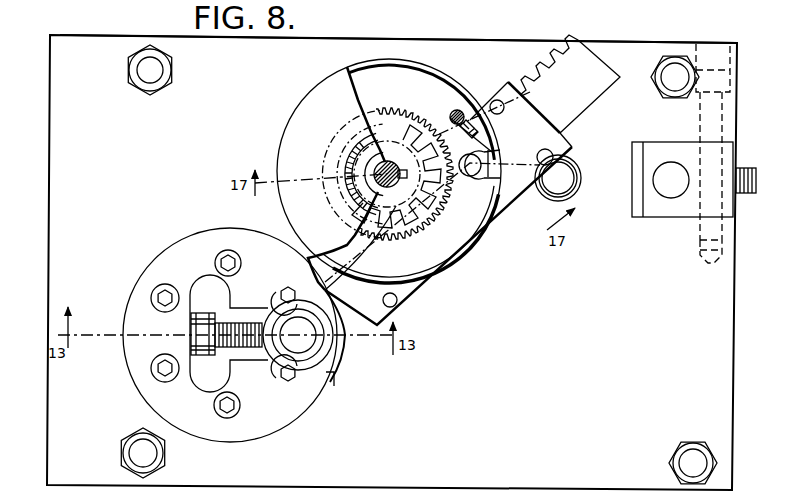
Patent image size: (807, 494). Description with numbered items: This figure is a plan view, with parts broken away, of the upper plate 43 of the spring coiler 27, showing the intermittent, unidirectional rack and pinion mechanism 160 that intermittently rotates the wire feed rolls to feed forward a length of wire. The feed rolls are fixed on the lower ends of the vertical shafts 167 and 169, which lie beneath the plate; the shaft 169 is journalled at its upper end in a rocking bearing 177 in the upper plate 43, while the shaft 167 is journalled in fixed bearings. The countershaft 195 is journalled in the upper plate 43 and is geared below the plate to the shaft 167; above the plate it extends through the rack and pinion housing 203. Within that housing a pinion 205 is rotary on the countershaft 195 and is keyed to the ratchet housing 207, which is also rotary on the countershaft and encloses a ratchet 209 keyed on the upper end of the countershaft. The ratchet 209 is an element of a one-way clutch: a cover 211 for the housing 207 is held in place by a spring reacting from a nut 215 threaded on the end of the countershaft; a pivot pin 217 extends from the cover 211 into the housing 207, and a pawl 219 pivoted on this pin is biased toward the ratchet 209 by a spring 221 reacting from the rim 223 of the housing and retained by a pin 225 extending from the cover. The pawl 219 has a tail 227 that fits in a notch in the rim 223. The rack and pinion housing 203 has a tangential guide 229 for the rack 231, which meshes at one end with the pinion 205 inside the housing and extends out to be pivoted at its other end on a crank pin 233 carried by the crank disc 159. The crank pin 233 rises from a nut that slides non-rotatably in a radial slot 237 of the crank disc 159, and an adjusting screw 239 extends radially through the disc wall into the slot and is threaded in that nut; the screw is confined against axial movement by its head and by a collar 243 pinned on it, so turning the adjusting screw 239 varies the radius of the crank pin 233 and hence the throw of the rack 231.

The upper plate 43 is at (62, 160).
The spring coiler 27 is at (484, 43).
The rocking bearing 177 is at (668, 150).
The vertical shaft 169 is at (660, 192).
The ratchet housing 207 is at (468, 254).
The rim 223 is at (425, 78).
The ratchet 209 is at (410, 238).
The nut 215 is at (358, 172).
The pinion 205 is at (362, 198).
The countershaft 195 is at (385, 152).
The cover 211 is at (316, 112).
The rack and pinion housing 203 is at (508, 198).
The rack and pinion mechanism 160 is at (410, 296).
The rack 231 is at (562, 114).
The tangential guide 229 is at (548, 140).
The spring 221 is at (490, 141).
The tail 227 is at (500, 157).
The pin 225 is at (458, 109).
The pawl 219 is at (461, 124).
The pivot pin 217 is at (472, 177).
The vertical shaft 167 is at (566, 180).
The crank disc 159 is at (175, 254).
The radial slot 237 is at (256, 312).
The crank pin 233 is at (305, 326).
The collar 243 is at (204, 314).
The adjusting screw 239 is at (250, 348).